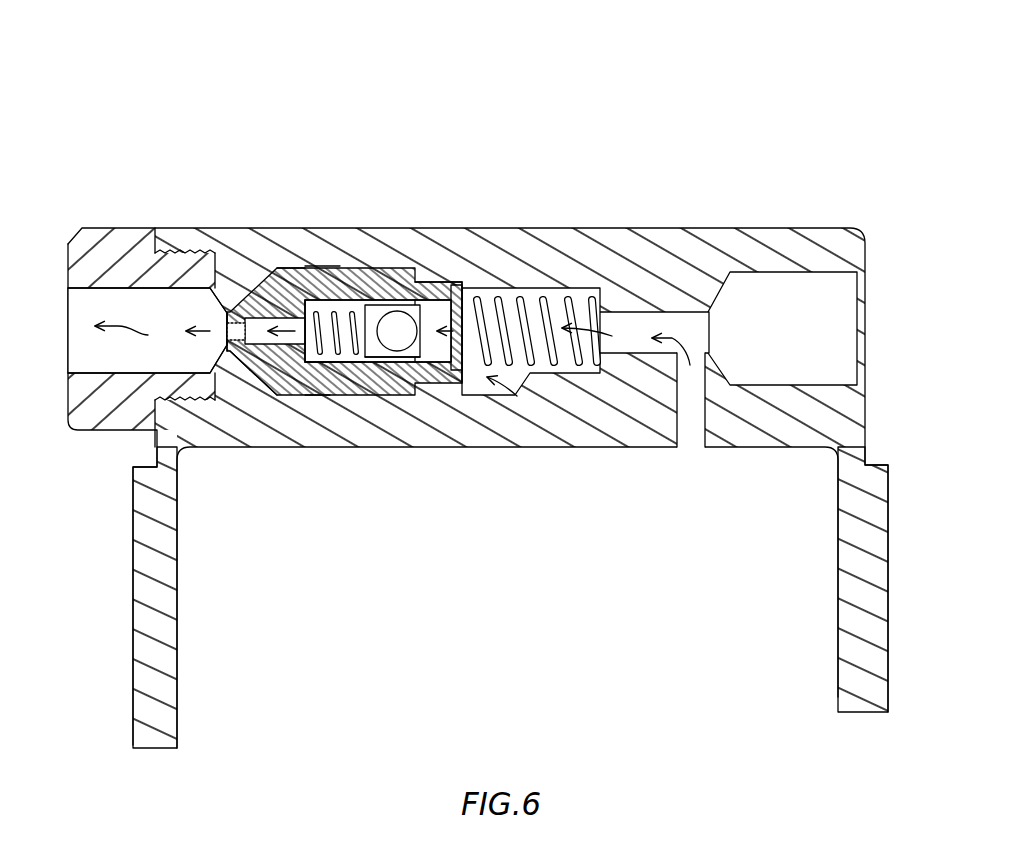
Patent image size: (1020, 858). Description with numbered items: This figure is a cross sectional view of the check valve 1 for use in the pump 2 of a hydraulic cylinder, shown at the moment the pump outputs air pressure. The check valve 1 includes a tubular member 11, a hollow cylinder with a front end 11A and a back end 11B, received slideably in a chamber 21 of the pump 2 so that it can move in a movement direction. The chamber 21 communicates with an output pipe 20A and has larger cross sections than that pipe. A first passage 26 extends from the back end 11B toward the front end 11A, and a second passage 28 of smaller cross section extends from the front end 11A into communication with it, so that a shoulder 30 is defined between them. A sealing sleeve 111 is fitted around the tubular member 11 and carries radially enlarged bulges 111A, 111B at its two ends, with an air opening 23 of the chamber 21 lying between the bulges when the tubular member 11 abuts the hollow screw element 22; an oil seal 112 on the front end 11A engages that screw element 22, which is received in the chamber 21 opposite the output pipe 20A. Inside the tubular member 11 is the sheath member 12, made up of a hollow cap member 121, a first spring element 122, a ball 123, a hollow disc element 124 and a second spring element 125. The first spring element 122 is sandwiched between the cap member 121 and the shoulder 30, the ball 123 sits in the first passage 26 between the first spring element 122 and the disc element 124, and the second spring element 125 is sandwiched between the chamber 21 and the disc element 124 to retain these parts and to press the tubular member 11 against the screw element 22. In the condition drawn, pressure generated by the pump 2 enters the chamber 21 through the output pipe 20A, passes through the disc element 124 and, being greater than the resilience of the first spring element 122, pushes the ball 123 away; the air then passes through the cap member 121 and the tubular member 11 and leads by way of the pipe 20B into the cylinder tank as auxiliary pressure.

The check valve 1 is at (483, 380).
The pump 2 is at (840, 530).
The tubular member 11 is at (440, 280).
The front end 11A is at (233, 337).
The back end 11B is at (470, 395).
The sheath member 12 is at (478, 286).
The output pipe 20A is at (630, 330).
The pipe 20B is at (242, 330).
The chamber 21 is at (560, 300).
The hollow screw element 22 is at (125, 258).
The air opening 23 is at (333, 262).
The first passage 26 is at (385, 398).
The second passage 28 is at (245, 385).
The shoulder 30 is at (312, 398).
The sealing sleeve 111 is at (372, 265).
The radially enlarged bulge 111A is at (305, 262).
The radially enlarged bulge 111B is at (390, 265).
The oil seal 112 is at (273, 397).
The hollow cap member 121 is at (285, 265).
The first spring element 122 is at (345, 398).
The ball 123 is at (405, 345).
The hollow disc element 124 is at (455, 380).
The second spring element 125 is at (572, 290).